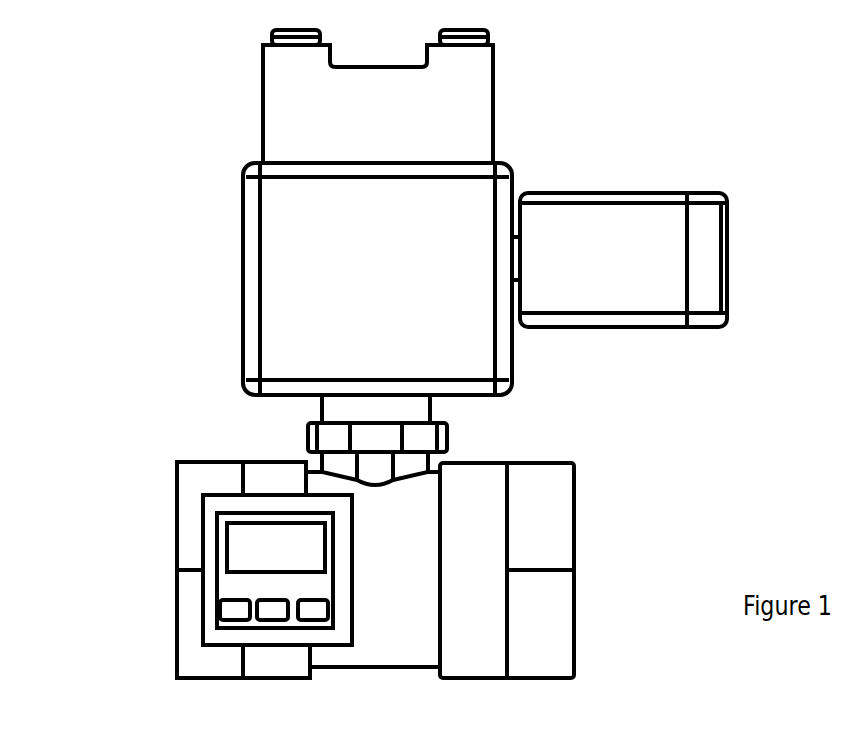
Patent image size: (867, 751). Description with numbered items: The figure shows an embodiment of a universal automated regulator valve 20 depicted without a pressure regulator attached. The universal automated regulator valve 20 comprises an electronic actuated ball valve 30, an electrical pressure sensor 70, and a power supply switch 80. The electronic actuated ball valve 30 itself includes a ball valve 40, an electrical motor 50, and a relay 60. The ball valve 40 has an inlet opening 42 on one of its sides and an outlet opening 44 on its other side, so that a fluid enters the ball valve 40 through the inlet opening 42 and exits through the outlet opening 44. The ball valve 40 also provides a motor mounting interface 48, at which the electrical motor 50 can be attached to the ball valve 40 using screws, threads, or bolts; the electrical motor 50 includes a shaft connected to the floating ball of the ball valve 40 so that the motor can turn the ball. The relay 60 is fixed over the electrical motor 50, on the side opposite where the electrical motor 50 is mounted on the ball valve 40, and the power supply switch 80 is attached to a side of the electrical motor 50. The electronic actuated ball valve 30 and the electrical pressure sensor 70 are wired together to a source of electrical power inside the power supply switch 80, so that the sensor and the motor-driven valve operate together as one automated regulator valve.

The universal automated regulator valve 20 is at (110, 84).
The electronic actuated ball valve 30 is at (161, 157).
The ball valve 40 is at (532, 452).
The inlet opening 42 is at (177, 500).
The outlet opening 44 is at (575, 505).
The motor mounting interface 48 is at (306, 434).
The electrical motor 50 is at (227, 289).
The relay 60 is at (480, 99).
The electrical pressure sensor 70 is at (187, 609).
The power supply switch 80 is at (643, 230).